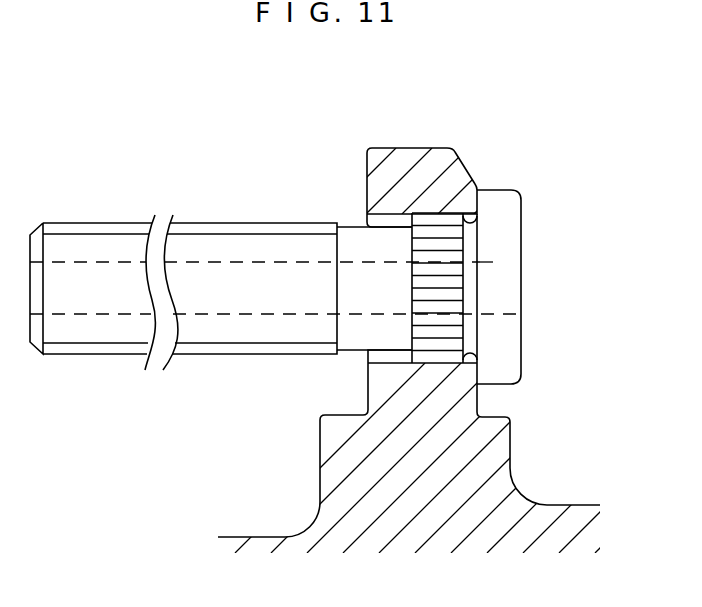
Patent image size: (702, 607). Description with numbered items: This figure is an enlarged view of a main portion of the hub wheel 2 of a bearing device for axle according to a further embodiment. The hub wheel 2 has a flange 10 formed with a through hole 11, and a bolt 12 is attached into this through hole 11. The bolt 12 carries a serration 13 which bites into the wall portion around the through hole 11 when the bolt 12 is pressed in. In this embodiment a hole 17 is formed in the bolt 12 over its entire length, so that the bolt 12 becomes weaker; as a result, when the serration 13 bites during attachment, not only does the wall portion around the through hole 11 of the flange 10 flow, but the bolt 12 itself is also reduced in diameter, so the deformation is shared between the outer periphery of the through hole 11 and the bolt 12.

The flange 10 is at (404, 140).
The through hole 11 is at (368, 225).
The bolt 12 is at (524, 189).
The serration 13 is at (443, 290).
The hole 17 is at (503, 262).
The hub wheel 2 is at (551, 498).